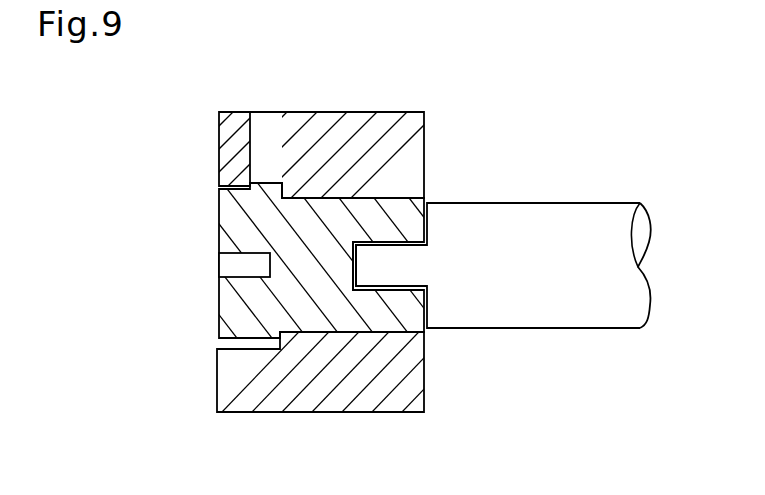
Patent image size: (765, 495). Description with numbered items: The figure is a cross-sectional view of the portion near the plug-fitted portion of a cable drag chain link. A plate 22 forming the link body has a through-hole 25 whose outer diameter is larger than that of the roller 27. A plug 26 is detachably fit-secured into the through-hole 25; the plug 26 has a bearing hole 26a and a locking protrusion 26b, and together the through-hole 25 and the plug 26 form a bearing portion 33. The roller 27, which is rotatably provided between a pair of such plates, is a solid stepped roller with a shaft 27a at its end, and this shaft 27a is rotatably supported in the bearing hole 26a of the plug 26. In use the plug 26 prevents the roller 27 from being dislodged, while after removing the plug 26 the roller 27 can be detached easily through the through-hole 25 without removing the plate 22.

The plate 22 is at (420, 140).
The through-hole 25 is at (368, 199).
The plug 26 is at (303, 225).
The bearing hole 26a is at (395, 288).
The locking protrusion 26b is at (270, 188).
The roller 27 is at (582, 223).
The shaft 27a is at (385, 265).
The bearing portion 33 is at (428, 67).